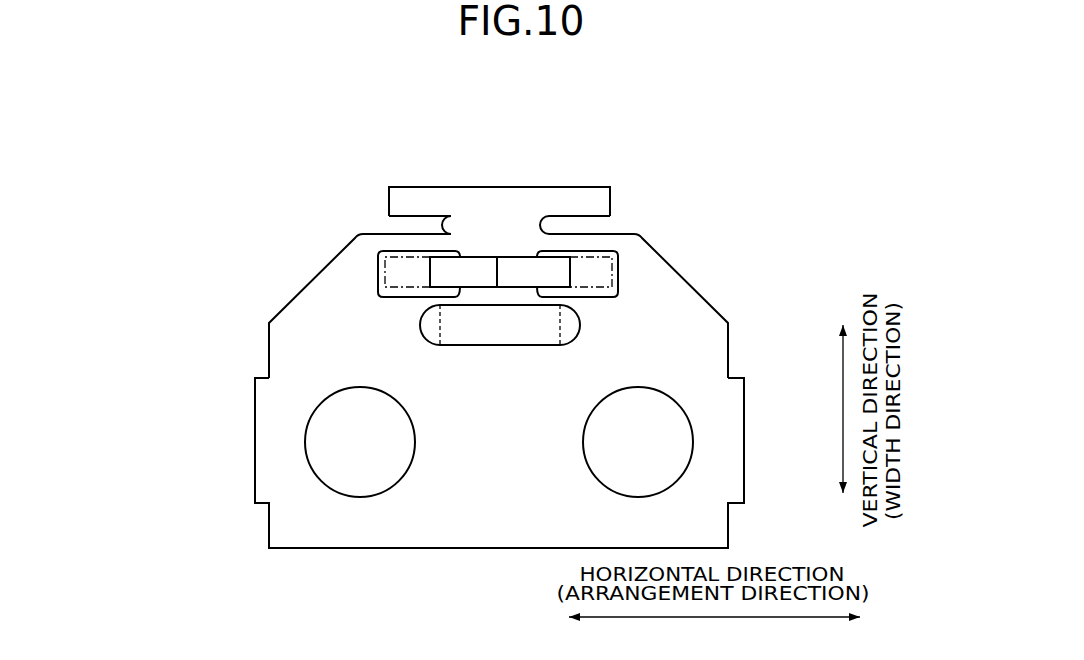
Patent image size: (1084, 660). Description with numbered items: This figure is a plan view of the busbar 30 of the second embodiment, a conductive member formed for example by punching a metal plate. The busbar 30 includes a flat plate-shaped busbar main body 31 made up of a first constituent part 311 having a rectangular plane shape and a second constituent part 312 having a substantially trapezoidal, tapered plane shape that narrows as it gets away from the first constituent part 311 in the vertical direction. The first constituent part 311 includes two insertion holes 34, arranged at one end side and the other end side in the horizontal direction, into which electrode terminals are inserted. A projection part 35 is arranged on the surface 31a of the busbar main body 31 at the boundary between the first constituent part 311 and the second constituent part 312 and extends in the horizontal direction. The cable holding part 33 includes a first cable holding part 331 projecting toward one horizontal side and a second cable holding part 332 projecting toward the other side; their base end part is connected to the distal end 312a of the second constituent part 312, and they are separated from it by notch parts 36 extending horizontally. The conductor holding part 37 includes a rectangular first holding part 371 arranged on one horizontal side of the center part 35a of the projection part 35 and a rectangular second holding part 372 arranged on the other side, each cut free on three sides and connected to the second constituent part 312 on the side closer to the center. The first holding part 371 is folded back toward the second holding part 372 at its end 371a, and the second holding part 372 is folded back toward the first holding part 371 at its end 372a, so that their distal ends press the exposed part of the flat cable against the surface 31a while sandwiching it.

The busbar 30 is at (333, 172).
The busbar main body 31 is at (152, 292).
The first constituent part 311 is at (252, 417).
The second constituent part 312 is at (286, 306).
The distal end of the second constituent part 312a is at (353, 227).
The surface of the busbar main body 31a is at (676, 353).
The cable holding part 33 is at (620, 90).
The first cable holding part 331 is at (593, 186).
The second cable holding part 332 is at (401, 186).
The insertion hole 34 is at (609, 484).
The projection part 35 is at (584, 315).
The center part of the projection part 35a is at (498, 328).
The notch part 36 is at (453, 226).
The conductor holding part 37 is at (553, 149).
The first holding part 371 is at (517, 253).
The end of the first holding part 371a is at (542, 247).
The second holding part 372 is at (483, 253).
The end of the second holding part 372a is at (457, 252).